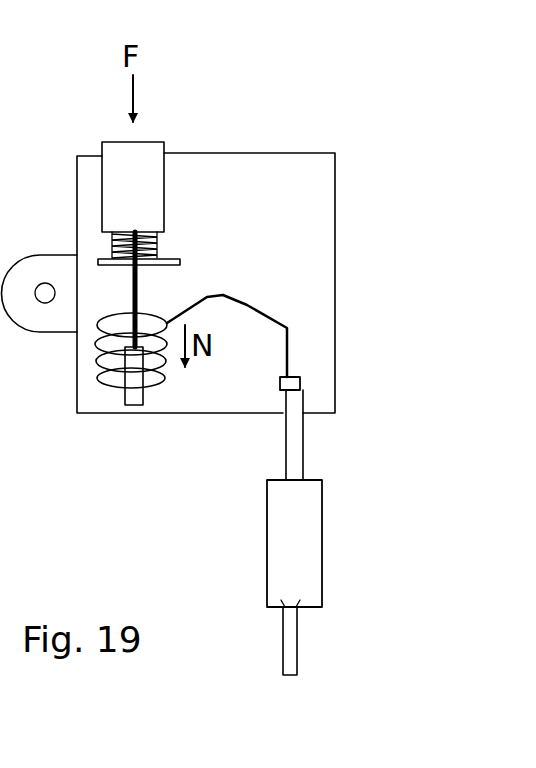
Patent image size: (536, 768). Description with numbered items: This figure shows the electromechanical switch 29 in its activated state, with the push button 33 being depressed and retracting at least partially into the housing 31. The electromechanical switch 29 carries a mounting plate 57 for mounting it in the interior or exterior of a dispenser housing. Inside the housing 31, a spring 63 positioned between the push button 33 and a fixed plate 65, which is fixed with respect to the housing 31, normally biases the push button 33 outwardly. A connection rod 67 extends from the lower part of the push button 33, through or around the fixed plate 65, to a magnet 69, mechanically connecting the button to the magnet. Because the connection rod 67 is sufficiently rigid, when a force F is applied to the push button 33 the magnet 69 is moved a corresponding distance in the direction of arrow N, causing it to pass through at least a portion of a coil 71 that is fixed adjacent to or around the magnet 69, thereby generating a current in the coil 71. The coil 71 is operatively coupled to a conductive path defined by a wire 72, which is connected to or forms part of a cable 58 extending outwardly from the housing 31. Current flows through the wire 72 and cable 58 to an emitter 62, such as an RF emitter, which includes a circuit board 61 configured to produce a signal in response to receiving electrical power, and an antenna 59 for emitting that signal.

The electromechanical switch 29 is at (360, 106).
The housing 31 is at (336, 186).
The push button 33 is at (150, 153).
The mounting plate 57 is at (28, 317).
The cable 58 is at (302, 466).
The antenna 59 is at (298, 645).
The circuit board 61 is at (303, 565).
The emitter 62 is at (264, 634).
The spring 63 is at (147, 243).
The fixed plate 65 is at (160, 266).
The connection rod 67 is at (130, 285).
The magnet 69 is at (133, 397).
The coil 71 is at (110, 380).
The wire 72 is at (285, 313).